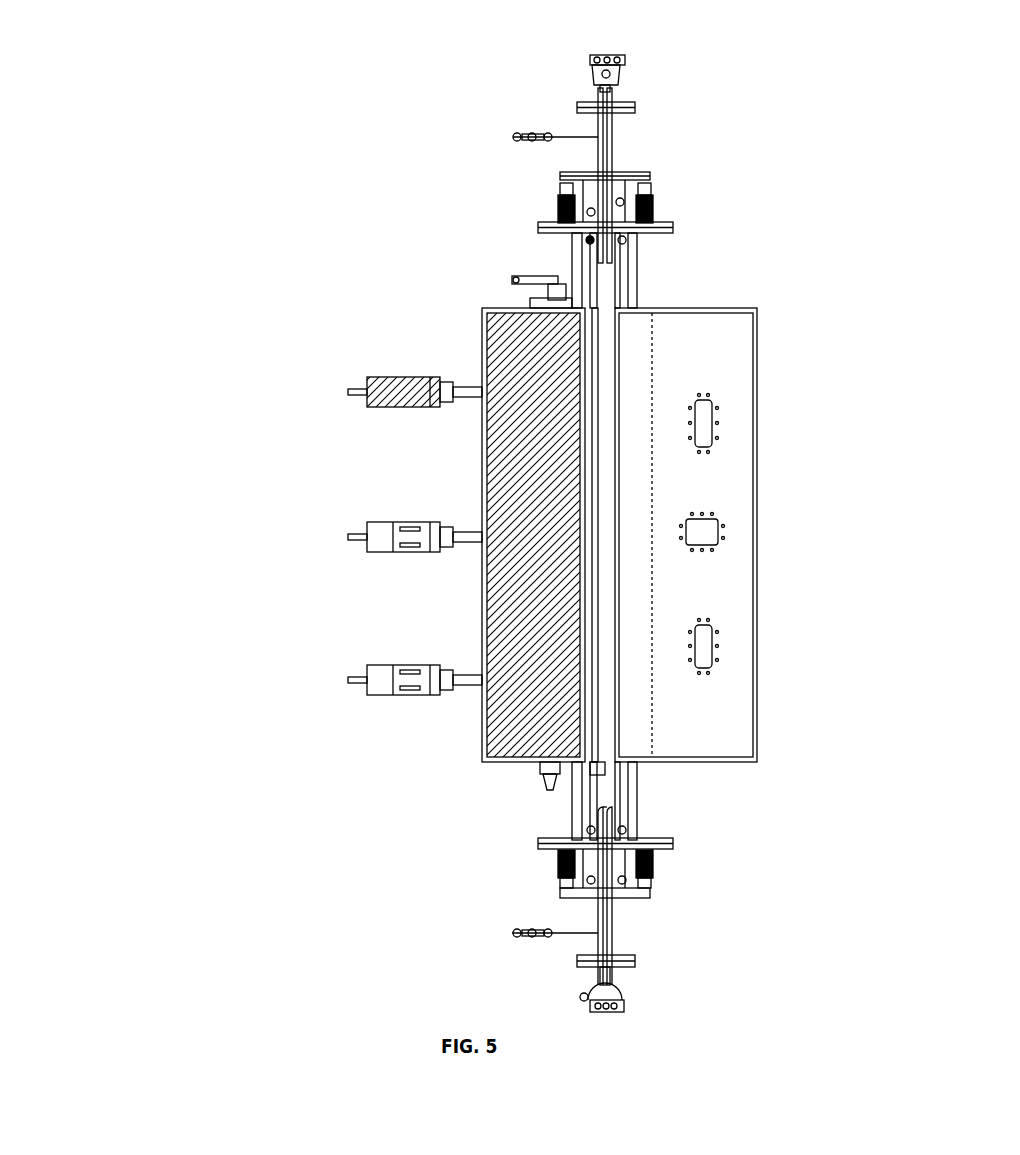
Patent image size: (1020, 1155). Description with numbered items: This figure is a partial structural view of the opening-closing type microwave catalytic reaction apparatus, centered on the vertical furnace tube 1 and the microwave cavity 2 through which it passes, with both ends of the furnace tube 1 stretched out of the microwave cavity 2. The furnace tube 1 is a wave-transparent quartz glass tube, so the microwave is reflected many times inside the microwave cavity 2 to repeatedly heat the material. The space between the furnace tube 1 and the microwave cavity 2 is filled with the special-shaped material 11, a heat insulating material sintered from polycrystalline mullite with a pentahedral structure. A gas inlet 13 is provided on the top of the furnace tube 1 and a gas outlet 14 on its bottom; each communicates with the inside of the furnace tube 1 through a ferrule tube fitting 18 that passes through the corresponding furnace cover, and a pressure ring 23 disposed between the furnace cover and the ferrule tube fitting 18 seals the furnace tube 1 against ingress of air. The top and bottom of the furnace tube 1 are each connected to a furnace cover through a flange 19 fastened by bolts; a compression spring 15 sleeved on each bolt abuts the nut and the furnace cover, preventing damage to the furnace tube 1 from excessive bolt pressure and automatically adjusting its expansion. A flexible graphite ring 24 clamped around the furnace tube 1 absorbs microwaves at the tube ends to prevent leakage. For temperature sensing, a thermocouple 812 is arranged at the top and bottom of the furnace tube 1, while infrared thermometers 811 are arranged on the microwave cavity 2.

The furnace tube 1 is at (610, 365).
The microwave cavity 2 is at (480, 597).
The special-shaped material 11 is at (540, 470).
The gas inlet 13 is at (513, 137).
The gas outlet 14 is at (512, 933).
The compression spring 15 is at (560, 855).
The ferrule tube fitting 18 is at (625, 192).
The flange 19 is at (585, 176).
The pressure ring 23 is at (590, 237).
The flexible graphite ring 24 is at (625, 278).
The infrared thermometer 811 is at (385, 683).
The thermocouple 812 is at (590, 70).